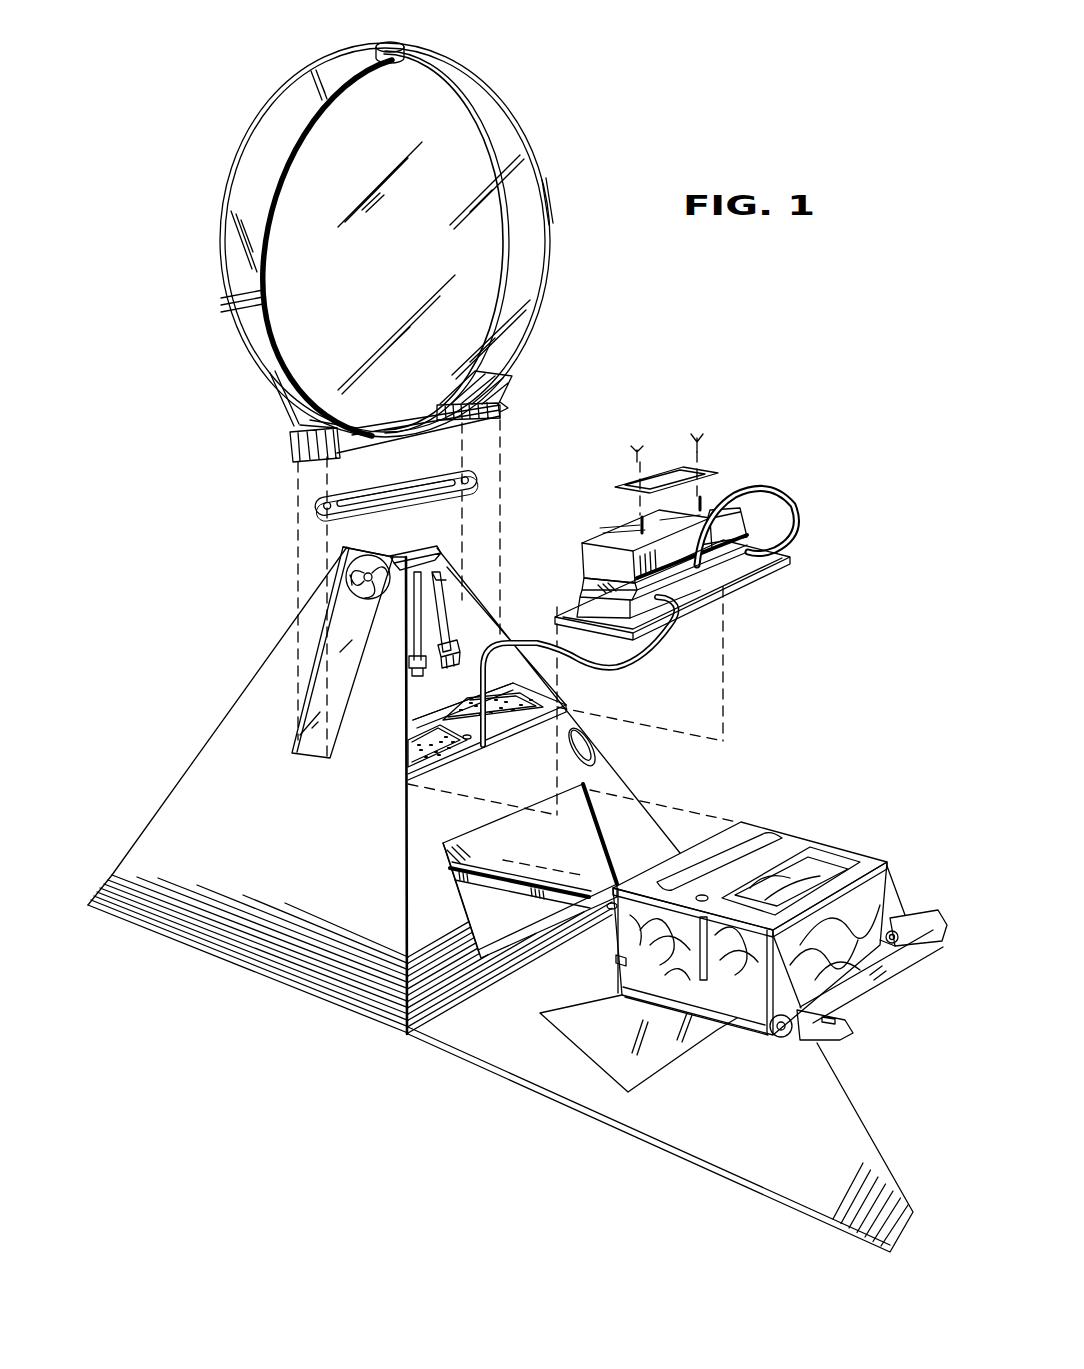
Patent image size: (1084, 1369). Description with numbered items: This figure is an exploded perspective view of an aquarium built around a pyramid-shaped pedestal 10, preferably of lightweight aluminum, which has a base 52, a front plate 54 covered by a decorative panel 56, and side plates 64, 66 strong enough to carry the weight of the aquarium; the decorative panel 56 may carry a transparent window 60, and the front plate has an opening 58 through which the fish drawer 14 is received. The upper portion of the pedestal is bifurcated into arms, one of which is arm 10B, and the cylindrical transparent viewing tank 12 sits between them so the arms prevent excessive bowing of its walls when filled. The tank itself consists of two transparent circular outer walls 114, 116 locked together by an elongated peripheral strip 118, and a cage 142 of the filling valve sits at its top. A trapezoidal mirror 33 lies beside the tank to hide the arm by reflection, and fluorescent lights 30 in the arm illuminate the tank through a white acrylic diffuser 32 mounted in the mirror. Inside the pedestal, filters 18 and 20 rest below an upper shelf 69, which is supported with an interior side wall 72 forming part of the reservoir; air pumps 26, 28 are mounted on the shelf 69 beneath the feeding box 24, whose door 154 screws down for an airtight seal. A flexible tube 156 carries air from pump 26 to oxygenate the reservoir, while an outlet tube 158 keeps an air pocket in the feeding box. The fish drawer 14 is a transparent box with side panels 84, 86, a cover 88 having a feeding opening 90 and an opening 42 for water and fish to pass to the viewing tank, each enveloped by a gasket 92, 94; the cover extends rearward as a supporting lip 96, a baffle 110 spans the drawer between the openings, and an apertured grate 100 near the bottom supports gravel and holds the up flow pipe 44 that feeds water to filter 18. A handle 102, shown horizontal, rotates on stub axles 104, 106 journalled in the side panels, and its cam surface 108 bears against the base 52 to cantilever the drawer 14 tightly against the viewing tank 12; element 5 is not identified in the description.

The slot 5 is at (596, 758).
The pyramid-shaped pedestal 10 is at (234, 712).
The pedestal arm 10B is at (457, 620).
The cylindrical transparent viewing tank 12 is at (518, 350).
The secondary fish tank (fish drawer) 14 is at (642, 1026).
The filter 18 is at (448, 760).
The filter 20 is at (520, 724).
The feeding box 24 is at (566, 561).
The air pump 26 is at (597, 604).
The air pump 28 is at (745, 566).
The fluorescent lights 30 is at (447, 572).
The white acrylic diffuser 32 is at (384, 552).
The mirror 33 is at (330, 728).
The opening 42 is at (760, 836).
The up flow pipe 44 is at (700, 975).
The base 52 is at (505, 868).
The front plate 54 is at (640, 824).
The decorative panel 56 is at (680, 1143).
The opening 58 is at (456, 842).
The transparent window 60 is at (575, 1048).
The side plate 64 is at (290, 990).
The side plate 66 is at (566, 705).
The upper shelf 69 is at (440, 722).
The interior side wall 72 is at (590, 822).
The side panel 84 is at (776, 983).
The side panel 86 is at (892, 904).
The cover 88 is at (795, 846).
The feeding opening 90 is at (826, 856).
The gasket 92 is at (668, 874).
The gasket 94 is at (886, 866).
The supporting lip 96 is at (608, 918).
The apertured grate 100 is at (670, 1000).
The handle 102 is at (848, 1020).
The stub axle 104 is at (782, 1040).
The stub axle 106 is at (893, 975).
The cam surface 108 is at (886, 940).
The baffle 110 is at (616, 960).
The transparent circular outer wall 114 is at (218, 250).
The transparent circular outer wall 116 is at (514, 146).
The elongated peripheral strip 118 is at (272, 108).
The cage 142 is at (397, 45).
The door 154 is at (665, 466).
The flexible tube 156 is at (645, 672).
The outlet tube 158 is at (770, 497).